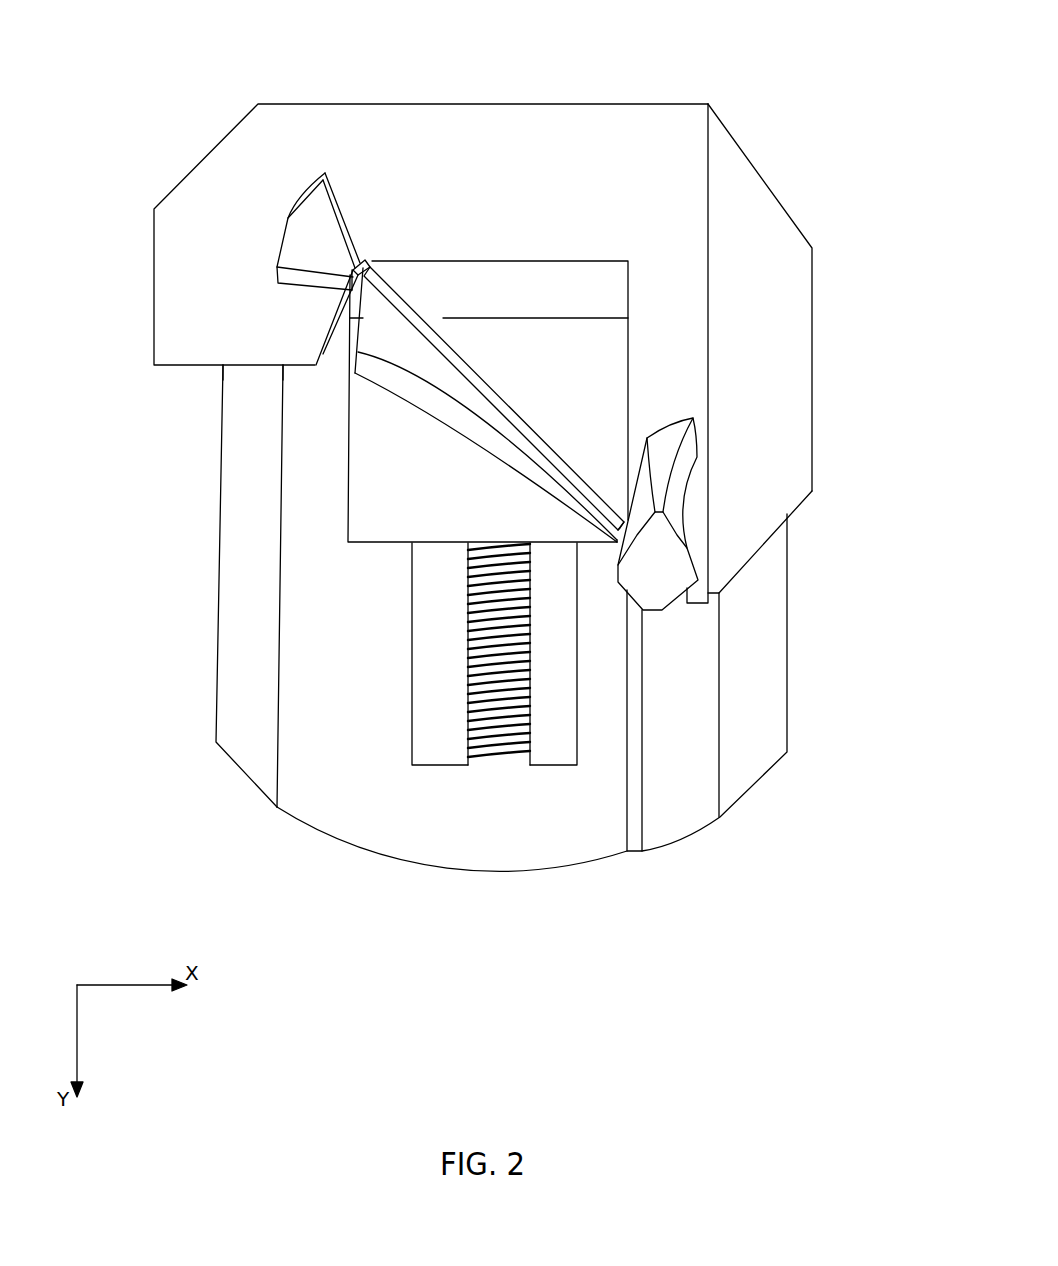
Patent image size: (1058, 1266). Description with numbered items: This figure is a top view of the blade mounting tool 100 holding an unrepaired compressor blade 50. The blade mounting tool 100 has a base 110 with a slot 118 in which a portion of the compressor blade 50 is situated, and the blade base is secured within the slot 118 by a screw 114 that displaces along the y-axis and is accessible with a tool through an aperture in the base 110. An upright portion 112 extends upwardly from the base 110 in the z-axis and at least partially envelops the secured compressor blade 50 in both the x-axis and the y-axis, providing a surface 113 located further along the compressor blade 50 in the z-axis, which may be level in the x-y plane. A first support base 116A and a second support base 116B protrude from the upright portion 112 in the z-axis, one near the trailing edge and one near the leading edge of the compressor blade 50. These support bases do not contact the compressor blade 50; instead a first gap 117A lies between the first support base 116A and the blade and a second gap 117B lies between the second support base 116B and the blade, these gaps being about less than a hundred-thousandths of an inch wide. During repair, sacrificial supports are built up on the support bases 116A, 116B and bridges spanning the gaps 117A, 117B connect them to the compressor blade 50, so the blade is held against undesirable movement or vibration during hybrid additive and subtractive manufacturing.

The blade mounting tool 100 is at (167, 63).
The base 110 is at (238, 702).
The upright portion 112 is at (812, 308).
The surface 113 is at (642, 125).
The screw 114 is at (465, 730).
The first support base 116A is at (677, 605).
The second support base 116B is at (283, 238).
The first gap 117A is at (618, 492).
The second gap 117B is at (368, 257).
The slot 118 is at (397, 670).
The compressor blade 50 is at (418, 297).